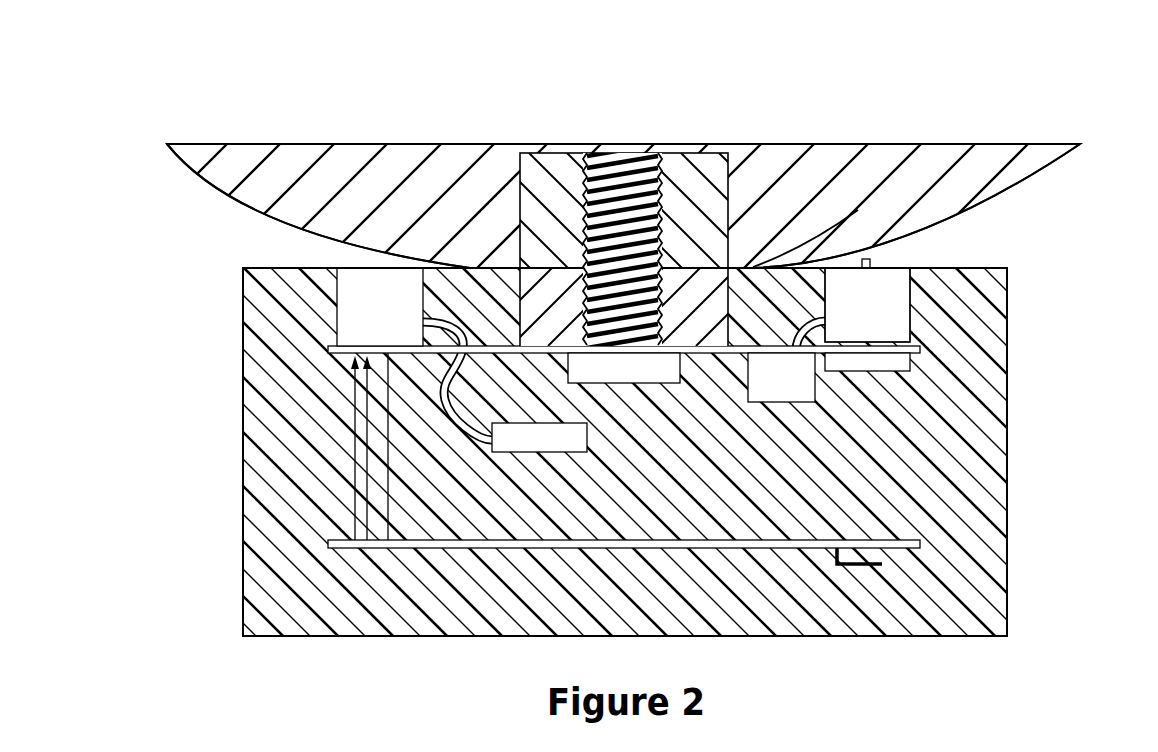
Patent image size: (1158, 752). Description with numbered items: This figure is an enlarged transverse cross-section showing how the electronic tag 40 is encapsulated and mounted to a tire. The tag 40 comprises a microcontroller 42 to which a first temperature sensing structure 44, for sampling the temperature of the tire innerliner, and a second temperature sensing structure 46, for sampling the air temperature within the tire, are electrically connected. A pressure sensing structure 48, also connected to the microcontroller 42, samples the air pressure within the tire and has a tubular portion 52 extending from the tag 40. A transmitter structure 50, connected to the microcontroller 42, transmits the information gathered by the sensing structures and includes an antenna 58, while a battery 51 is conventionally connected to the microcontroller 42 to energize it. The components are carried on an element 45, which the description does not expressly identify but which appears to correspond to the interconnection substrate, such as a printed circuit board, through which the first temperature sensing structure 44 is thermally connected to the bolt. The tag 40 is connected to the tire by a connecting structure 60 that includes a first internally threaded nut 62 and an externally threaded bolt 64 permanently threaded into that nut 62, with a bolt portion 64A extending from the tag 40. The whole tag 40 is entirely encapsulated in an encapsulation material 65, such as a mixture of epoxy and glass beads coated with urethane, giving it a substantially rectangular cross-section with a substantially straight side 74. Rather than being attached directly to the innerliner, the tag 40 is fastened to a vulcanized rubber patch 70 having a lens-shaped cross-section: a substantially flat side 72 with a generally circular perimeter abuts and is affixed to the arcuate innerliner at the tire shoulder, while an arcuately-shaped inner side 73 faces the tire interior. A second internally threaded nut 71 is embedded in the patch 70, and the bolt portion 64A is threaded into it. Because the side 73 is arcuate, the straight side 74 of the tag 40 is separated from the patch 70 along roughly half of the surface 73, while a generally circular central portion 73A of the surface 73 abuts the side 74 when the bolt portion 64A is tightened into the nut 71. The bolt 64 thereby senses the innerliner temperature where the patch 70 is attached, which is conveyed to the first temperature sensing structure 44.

The electronic tag 40 is at (1012, 338).
The microcontroller 42 is at (890, 378).
The first temperature sensing structure 44 is at (767, 392).
The circuit board 45 is at (505, 346).
The second temperature sensing structure 46 is at (363, 325).
The pressure sensing structure 48 is at (883, 328).
The transmitter structure 50 is at (726, 530).
The battery 51 is at (513, 438).
The tubular portion 52 is at (872, 262).
The antenna 58 is at (866, 566).
The connecting structure 60 is at (638, 390).
The first internally threaded nut 62 is at (735, 305).
The externally threaded bolt 64 is at (653, 372).
The bolt portion 64A is at (636, 187).
The encapsulation material 65 is at (975, 585).
The vulcanized rubber patch 70 is at (938, 138).
The second internally threaded nut 71 is at (733, 218).
The substantially flat side 72 is at (786, 144).
The arcuately-shaped inner side 73 is at (1022, 178).
The circular central portion 73A is at (827, 220).
The substantially straight side 74 is at (265, 270).